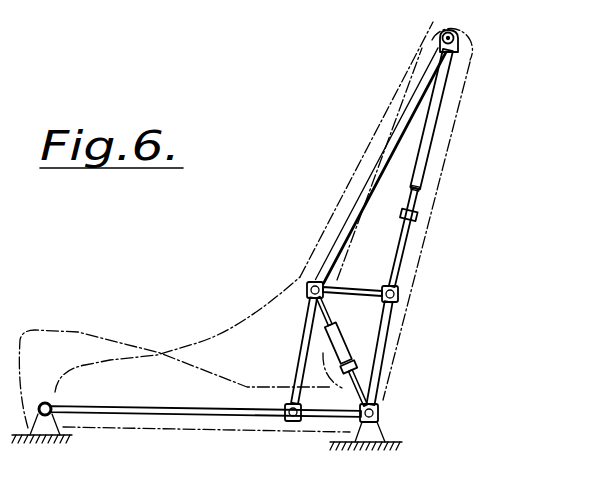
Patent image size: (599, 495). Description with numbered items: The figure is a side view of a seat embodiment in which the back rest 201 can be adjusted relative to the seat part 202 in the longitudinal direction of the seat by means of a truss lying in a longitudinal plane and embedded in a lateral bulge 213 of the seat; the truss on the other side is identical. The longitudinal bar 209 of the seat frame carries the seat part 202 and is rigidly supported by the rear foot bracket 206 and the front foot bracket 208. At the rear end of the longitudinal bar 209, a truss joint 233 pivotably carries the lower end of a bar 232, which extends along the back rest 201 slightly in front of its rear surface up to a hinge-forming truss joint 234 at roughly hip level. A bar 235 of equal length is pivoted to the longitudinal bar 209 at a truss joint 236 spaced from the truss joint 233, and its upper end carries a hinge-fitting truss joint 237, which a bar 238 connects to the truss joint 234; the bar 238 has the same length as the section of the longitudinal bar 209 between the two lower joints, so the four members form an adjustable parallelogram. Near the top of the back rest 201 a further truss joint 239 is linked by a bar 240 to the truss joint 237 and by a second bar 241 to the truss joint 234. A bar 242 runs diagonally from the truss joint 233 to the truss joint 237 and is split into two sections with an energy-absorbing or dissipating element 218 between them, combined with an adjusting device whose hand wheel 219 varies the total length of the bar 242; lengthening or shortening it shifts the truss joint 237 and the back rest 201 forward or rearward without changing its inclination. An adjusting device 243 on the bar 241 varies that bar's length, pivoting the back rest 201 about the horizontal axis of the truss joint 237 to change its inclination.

The back rest 201 is at (408, 248).
The seat part 202 is at (78, 330).
The rear foot bracket 206 is at (370, 440).
The front foot bracket 208 is at (43, 434).
The longitudinal bar 209 is at (173, 413).
The lateral bulge 213 is at (340, 203).
The energy-absorbing or dissipating element 218 is at (322, 346).
The hand wheel 219 is at (356, 371).
The bar 232 is at (393, 337).
The truss joint 233 is at (383, 412).
The truss joint 234 is at (400, 295).
The bar 235 is at (303, 343).
The truss joint 236 is at (286, 423).
The truss joint 237 is at (310, 283).
The bar 238 is at (362, 286).
The truss joint 239 is at (455, 39).
The bar 240 is at (380, 163).
The second bar 241 is at (422, 165).
The bar 242 is at (313, 318).
The adjusting device 243 is at (417, 220).